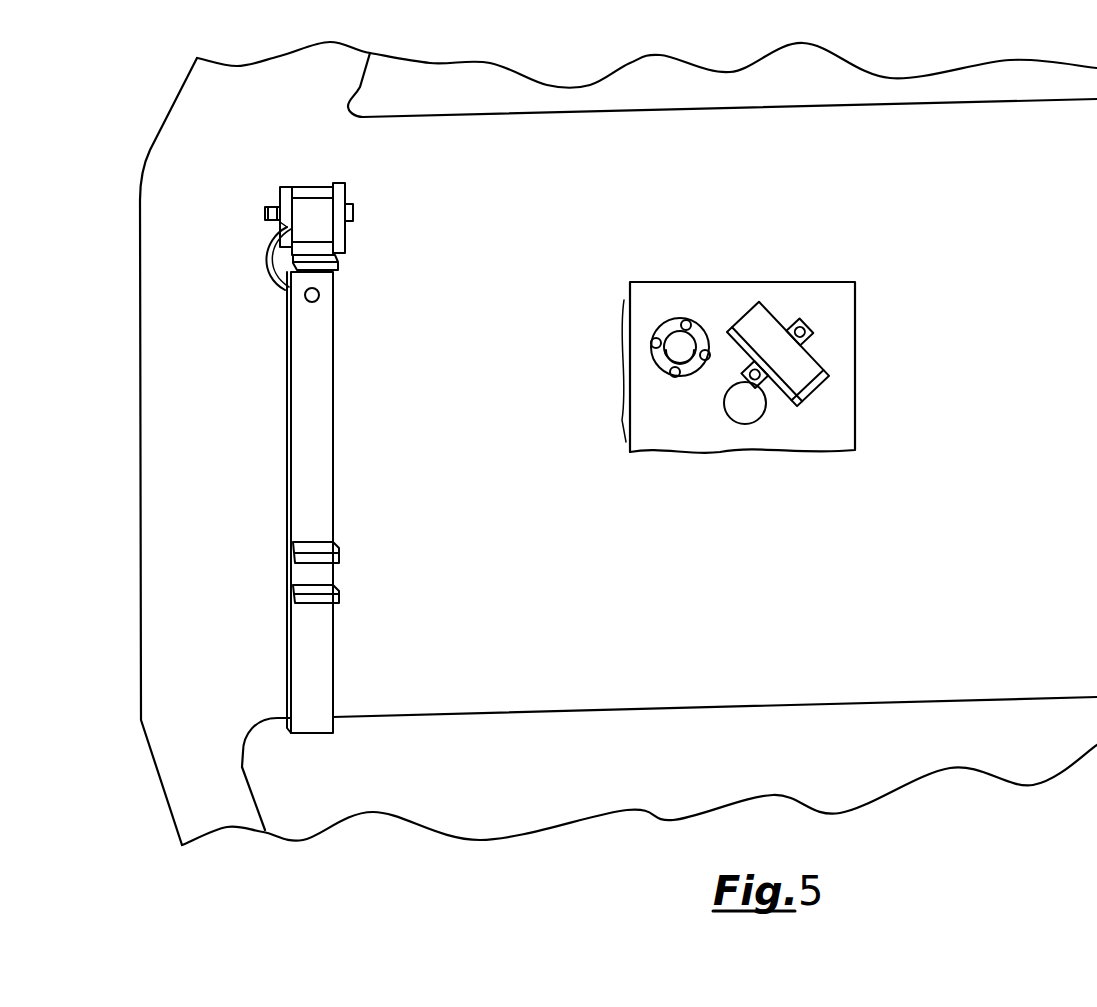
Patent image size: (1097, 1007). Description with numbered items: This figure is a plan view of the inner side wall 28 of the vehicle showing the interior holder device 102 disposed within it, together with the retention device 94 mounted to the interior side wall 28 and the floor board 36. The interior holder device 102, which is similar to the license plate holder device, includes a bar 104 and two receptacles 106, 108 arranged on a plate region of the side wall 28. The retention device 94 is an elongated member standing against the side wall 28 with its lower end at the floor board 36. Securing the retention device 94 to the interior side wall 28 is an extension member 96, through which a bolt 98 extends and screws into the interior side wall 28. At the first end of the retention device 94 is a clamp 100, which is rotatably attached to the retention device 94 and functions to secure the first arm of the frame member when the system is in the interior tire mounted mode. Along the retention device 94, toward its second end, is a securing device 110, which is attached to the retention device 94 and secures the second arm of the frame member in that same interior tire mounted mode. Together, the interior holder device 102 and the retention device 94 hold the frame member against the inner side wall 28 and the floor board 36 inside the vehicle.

The inner side wall 28 is at (730, 682).
The floor board 36 is at (515, 730).
The retention device 94 is at (272, 412).
The extension member 96 is at (270, 268).
The bolt 98 is at (305, 298).
The clamp 100 is at (280, 198).
The interior holder device 102 is at (677, 300).
The bar 104 is at (780, 337).
The receptacle 106 is at (661, 365).
The receptacle 108 is at (745, 418).
The securing device 110 is at (300, 576).